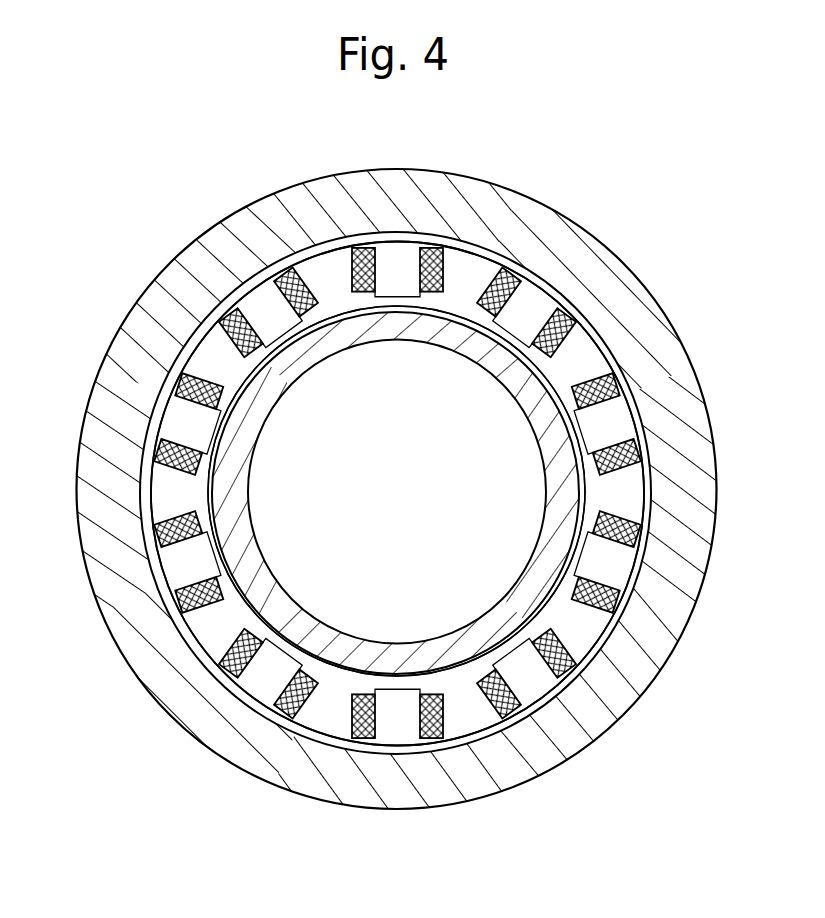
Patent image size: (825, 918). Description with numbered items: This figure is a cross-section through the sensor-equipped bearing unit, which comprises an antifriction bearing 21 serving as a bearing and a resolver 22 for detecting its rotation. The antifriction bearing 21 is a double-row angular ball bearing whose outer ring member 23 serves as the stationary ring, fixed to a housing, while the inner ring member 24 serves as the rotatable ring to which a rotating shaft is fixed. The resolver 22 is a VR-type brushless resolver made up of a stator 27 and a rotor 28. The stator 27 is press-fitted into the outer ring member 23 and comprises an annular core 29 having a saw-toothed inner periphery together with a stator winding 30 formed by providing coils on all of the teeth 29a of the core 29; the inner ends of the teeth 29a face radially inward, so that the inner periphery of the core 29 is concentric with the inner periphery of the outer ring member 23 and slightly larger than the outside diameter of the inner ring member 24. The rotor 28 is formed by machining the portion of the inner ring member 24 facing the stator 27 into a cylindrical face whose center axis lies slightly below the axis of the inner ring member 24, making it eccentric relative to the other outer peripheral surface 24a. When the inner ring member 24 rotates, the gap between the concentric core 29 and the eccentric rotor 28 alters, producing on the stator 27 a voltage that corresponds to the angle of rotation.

The antifriction bearing 21 is at (610, 241).
The resolver 22 is at (648, 428).
The outer ring member 23 is at (411, 197).
The inner ring member 24 is at (535, 392).
The outer peripheral surface 24a is at (338, 307).
The stator 27 is at (652, 410).
The rotor 28 is at (257, 380).
The core 29 is at (650, 482).
The teeth 29a is at (603, 548).
The stator winding 30 is at (600, 612).